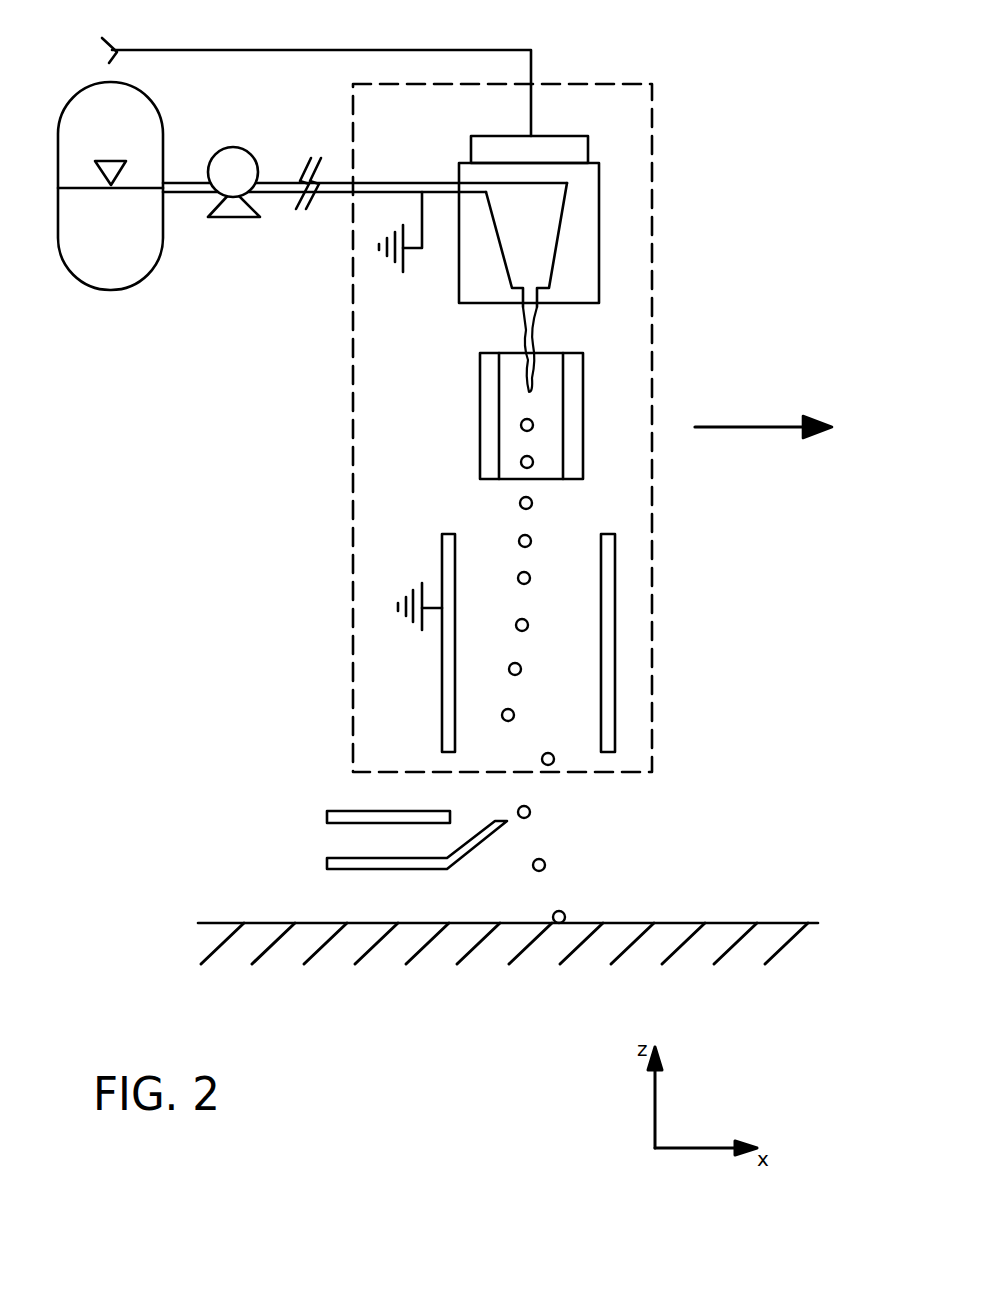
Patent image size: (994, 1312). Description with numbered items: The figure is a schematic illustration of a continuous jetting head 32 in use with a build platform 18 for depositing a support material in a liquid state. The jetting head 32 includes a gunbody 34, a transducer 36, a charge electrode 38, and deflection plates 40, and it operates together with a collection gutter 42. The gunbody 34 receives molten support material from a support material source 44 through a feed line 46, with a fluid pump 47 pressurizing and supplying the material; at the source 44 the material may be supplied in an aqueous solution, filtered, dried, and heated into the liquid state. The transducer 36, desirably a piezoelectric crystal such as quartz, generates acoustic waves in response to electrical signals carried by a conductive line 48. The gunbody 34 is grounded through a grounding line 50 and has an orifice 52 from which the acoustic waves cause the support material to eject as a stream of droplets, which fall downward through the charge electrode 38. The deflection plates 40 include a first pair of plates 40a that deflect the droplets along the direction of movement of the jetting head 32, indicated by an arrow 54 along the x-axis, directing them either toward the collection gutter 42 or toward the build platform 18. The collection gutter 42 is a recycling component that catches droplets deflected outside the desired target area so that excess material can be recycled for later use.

The build platform 18 is at (257, 923).
The jetting head 32 is at (740, 183).
The gunbody 34 is at (598, 217).
The transducer 36 is at (558, 138).
The charge electrode 38 is at (480, 383).
The deflection plates 40 is at (545, 643).
The plates 40a is at (447, 670).
The collection gutter 42 is at (336, 798).
The support material source 44 is at (163, 252).
The feed line 46 is at (330, 196).
The fluid pump 47 is at (232, 147).
The conductive line 48 is at (256, 50).
The grounding line 50 is at (417, 252).
The orifice 52 is at (556, 317).
The arrow 54 is at (763, 428).